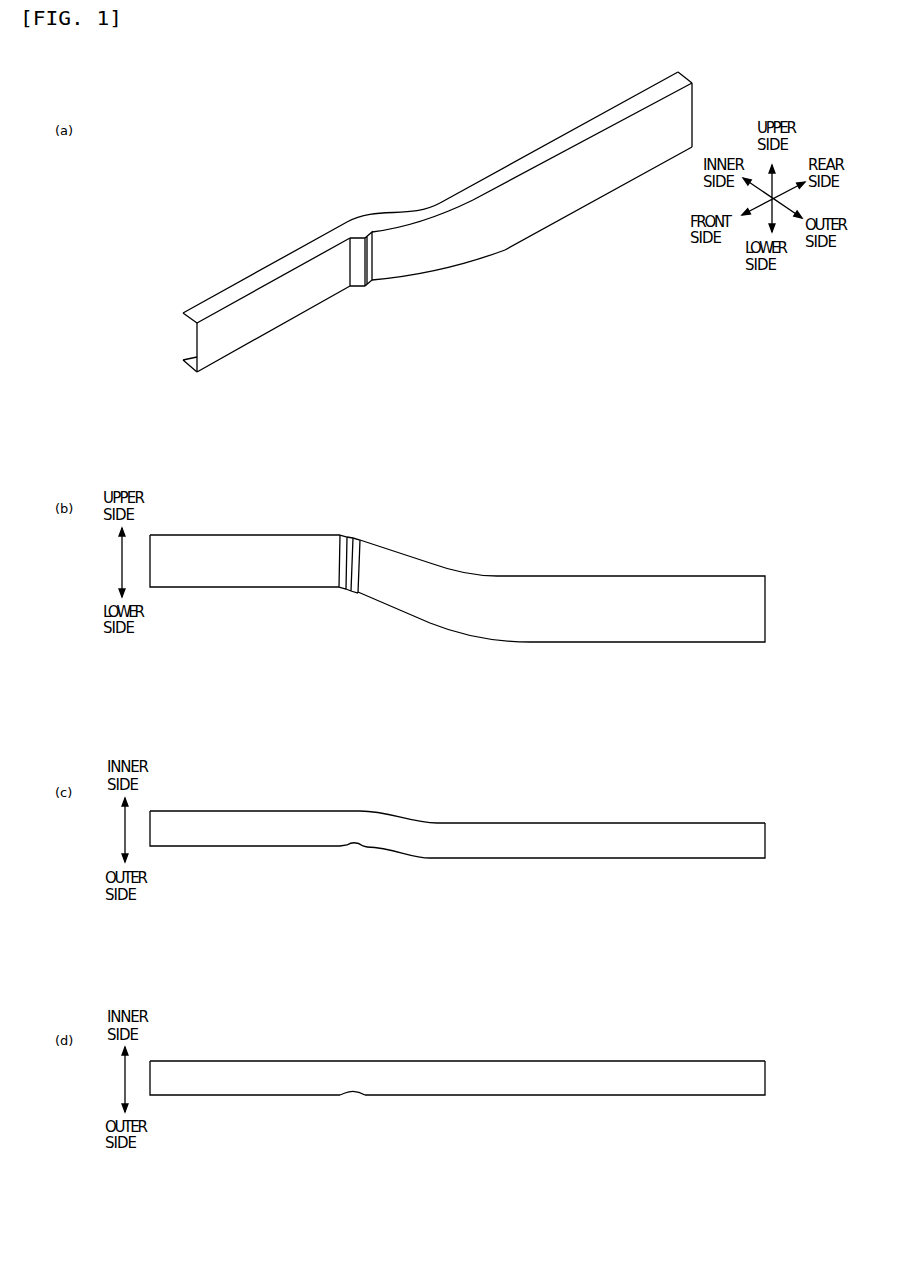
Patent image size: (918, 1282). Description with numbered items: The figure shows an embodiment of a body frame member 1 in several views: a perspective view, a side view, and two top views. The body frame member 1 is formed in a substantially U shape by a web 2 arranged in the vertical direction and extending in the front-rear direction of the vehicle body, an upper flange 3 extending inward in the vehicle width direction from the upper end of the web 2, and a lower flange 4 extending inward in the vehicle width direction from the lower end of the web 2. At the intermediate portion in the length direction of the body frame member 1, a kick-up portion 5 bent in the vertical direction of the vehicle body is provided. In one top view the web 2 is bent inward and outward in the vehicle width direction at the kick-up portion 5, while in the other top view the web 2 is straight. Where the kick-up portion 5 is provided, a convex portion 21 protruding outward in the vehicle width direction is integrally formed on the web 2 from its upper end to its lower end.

The body frame member 1 is at (457, 590).
The web 2 is at (268, 323).
The upper flange 3 is at (207, 308).
The lower flange 4 is at (183, 360).
The kick-up portion 5 is at (385, 203).
The convex portion 21 is at (365, 288).